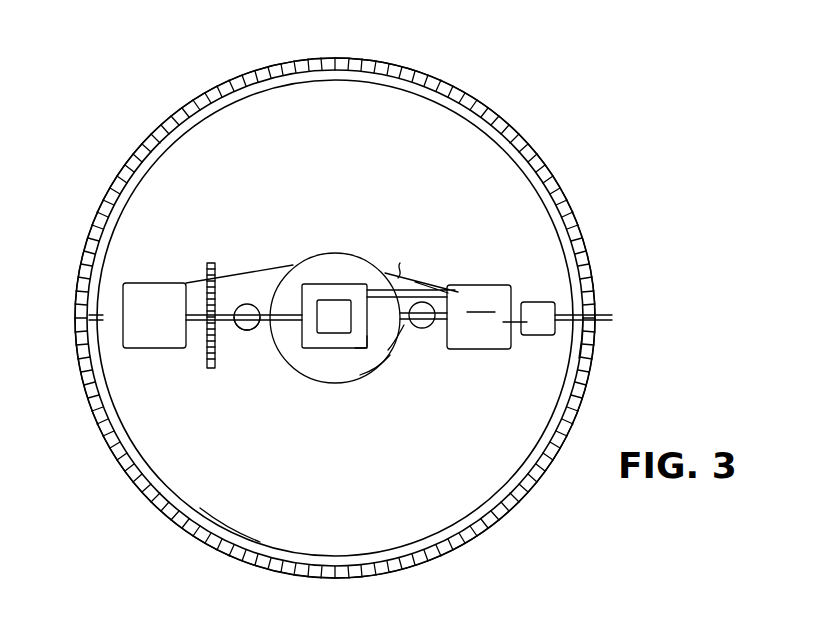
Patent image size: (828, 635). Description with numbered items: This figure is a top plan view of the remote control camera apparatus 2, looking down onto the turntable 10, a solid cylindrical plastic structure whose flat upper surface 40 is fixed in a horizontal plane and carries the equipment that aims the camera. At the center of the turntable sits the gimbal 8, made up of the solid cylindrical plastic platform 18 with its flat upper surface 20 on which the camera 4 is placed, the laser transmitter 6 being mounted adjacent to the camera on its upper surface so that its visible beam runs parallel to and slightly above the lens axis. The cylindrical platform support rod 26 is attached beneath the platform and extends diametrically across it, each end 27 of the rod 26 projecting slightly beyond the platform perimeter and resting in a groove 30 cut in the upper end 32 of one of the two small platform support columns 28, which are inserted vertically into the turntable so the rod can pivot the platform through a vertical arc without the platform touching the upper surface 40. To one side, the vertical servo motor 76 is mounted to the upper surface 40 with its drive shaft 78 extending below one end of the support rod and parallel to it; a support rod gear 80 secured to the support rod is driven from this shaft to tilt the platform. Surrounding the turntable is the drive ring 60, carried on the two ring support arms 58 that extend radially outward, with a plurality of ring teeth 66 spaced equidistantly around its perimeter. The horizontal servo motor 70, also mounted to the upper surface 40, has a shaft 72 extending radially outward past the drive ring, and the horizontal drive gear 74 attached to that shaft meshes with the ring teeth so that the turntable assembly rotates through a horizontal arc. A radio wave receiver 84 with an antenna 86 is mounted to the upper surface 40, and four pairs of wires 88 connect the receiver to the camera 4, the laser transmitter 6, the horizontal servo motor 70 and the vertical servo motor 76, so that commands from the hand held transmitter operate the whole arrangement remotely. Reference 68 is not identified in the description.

The remote control camera apparatus 2 is at (462, 68).
The camera 4 is at (347, 291).
The laser transmitter 6 is at (327, 307).
The gimbal 8 is at (310, 378).
The turntable 10 is at (482, 133).
The platform 18 is at (377, 368).
The upper surface 20 is at (392, 347).
The platform support rod 26 is at (236, 293).
The end of the rod 27 is at (428, 282).
The platform support column 28 is at (253, 329).
The groove 30 is at (241, 330).
The upper end 32 is at (365, 352).
The upper surface of the turntable 40 is at (263, 533).
The ring support arm 58 is at (103, 318).
The drive ring 60 is at (532, 146).
The ring teeth 66 is at (550, 168).
The outer ring surface 68 is at (567, 198).
The horizontal servo motor 70 is at (538, 302).
The shaft 72 is at (612, 317).
The horizontal drive gear 74 is at (592, 332).
The vertical servo motor 76 is at (165, 348).
The drive shaft 78 is at (197, 320).
The support rod gear 80 is at (212, 263).
The radio wave receiver 84 is at (475, 349).
The antenna 86 is at (481, 312).
The pairs of wires 88 is at (400, 265).